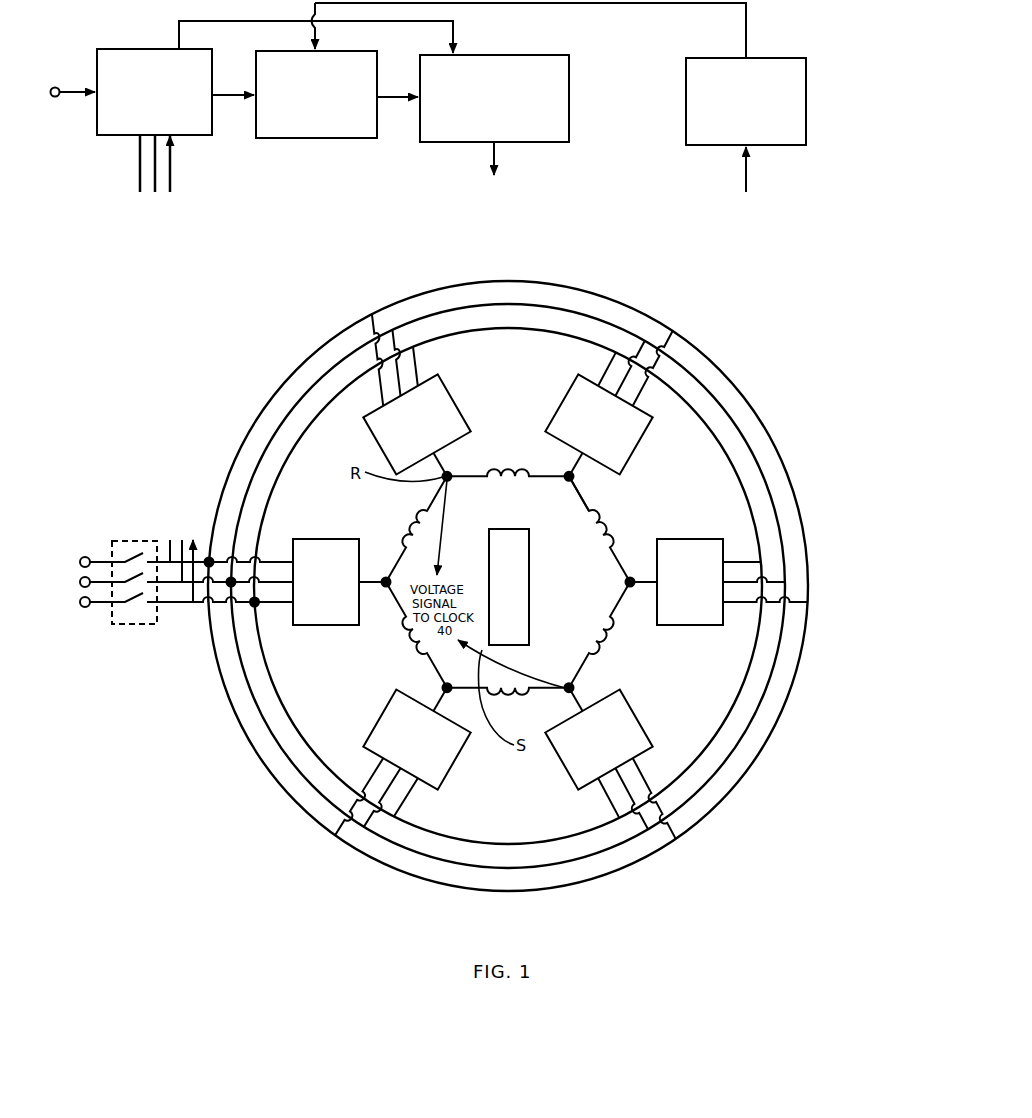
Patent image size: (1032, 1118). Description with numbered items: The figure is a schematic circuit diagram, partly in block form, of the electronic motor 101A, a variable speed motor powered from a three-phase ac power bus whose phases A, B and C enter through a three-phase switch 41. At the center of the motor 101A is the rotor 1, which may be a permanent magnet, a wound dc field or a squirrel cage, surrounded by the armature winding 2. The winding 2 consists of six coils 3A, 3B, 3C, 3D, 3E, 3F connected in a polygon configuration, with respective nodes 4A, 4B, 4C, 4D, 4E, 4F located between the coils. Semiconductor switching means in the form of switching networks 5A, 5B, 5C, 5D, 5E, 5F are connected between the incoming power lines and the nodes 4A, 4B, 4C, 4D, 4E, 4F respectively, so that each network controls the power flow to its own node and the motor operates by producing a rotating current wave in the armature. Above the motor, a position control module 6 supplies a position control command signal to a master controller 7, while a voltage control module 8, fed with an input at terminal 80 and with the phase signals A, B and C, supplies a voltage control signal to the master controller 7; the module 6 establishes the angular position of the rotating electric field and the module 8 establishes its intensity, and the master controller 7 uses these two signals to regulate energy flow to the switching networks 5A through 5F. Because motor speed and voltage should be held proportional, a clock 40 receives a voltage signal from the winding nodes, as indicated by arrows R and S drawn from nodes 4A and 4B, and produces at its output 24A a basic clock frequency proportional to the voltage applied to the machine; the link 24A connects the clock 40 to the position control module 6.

The rotor 1 is at (529, 542).
The armature winding 2 is at (622, 553).
The coil 3A is at (404, 530).
The coil 3B is at (528, 470).
The coil 3C is at (612, 526).
The coil 3D is at (607, 643).
The coil 3E is at (515, 703).
The coil 3F is at (396, 656).
The node 4A is at (452, 472).
The node 4B is at (574, 479).
The node 4C is at (634, 579).
The node 4D is at (574, 689).
The node 4E is at (450, 692).
The node 4F is at (386, 586).
The switching network 5A is at (469, 401).
The switching network 5B is at (652, 452).
The switching network 5C is at (708, 627).
The switching network 5D is at (572, 791).
The switching network 5E is at (451, 770).
The switching network 5F is at (320, 538).
The position control module 6 is at (363, 139).
The master controller 7 is at (569, 87).
The voltage control module 8 is at (203, 136).
The clock output 24A is at (746, 36).
The clock 40 is at (806, 110).
The three-phase switch 41 is at (146, 626).
The input terminal 80 is at (80, 100).
The motor 101A is at (268, 822).